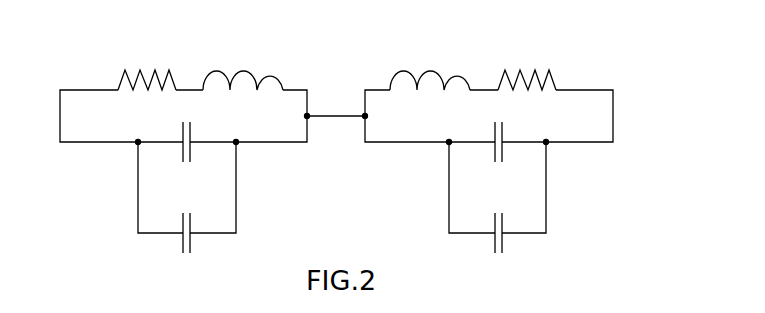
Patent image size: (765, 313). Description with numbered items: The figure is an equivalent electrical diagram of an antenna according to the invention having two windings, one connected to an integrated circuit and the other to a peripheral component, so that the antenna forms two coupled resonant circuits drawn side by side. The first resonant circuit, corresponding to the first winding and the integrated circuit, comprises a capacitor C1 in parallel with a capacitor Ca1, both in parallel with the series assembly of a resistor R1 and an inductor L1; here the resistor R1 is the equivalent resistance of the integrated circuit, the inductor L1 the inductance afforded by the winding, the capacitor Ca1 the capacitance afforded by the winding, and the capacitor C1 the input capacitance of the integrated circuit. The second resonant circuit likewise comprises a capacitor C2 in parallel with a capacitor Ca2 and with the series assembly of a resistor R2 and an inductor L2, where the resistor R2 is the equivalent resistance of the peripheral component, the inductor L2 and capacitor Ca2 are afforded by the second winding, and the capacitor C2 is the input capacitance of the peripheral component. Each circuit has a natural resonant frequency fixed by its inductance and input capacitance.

The resistor R1 is at (147, 71).
The inductor L1 is at (241, 71).
The capacitor Ca1 is at (192, 128).
The capacitor C1 is at (192, 247).
The inductor L2 is at (429, 71).
The resistor R2 is at (532, 71).
The capacitor Ca2 is at (504, 128).
The capacitor C2 is at (504, 247).